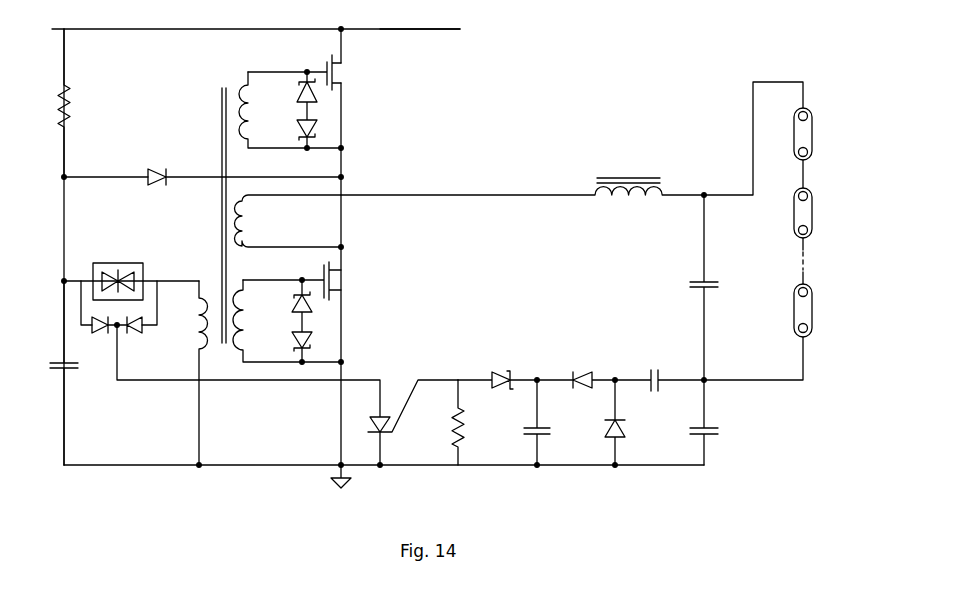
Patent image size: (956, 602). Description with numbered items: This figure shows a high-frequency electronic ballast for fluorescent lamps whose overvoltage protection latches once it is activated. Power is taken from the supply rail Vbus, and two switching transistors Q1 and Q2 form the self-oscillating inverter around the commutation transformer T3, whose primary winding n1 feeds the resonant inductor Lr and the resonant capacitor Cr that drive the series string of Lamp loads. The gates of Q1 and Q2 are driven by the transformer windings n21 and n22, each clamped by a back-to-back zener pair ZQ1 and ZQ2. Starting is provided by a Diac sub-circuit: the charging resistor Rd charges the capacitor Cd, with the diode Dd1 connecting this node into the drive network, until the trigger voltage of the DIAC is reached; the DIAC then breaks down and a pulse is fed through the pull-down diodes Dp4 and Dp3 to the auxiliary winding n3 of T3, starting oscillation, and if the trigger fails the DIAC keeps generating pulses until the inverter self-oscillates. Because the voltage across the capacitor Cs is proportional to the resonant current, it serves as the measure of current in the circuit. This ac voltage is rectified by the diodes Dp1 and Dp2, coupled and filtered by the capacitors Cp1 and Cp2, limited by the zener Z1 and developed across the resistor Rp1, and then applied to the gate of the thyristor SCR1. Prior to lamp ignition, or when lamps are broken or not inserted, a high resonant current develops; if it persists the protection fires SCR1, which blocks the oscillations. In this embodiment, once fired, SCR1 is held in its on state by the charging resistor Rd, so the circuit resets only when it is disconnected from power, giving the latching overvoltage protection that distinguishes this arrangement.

The DC bus voltage Vbus is at (420, 16).
The charging resistor Rd is at (81, 103).
The diode Dd1 is at (202, 167).
The transformer T3 is at (218, 205).
The MOSFET switch Q1 is at (307, 72).
The transformer winding n21 is at (290, 110).
The zener diode pair ZQ1 is at (289, 110).
The transformer primary winding n1 is at (288, 221).
The MOSFET switch Q2 is at (304, 281).
The transformer winding n22 is at (287, 321).
The zener diode pair ZQ2 is at (284, 321).
The Diac DIAC is at (131, 271).
The auxiliary winding n3 is at (191, 373).
The diode Dp4 is at (99, 319).
The pull down diode Dp3 is at (136, 319).
The capacitor Cd is at (53, 373).
The thyristor SCR1 is at (287, 396).
The resistor Rp1 is at (472, 422).
The zener diode Z1 is at (497, 368).
The protection capacitor Cp2 is at (550, 423).
The protection diode Dp1 is at (576, 367).
The protection diode Dp2 is at (629, 423).
The protection capacitor Cp1 is at (659, 369).
The capacitor Cs is at (715, 421).
The resonant capacitor Cr is at (713, 286).
The resonant inductor Lr is at (572, 138).
The fluorescent lamp Lamp is at (784, 244).